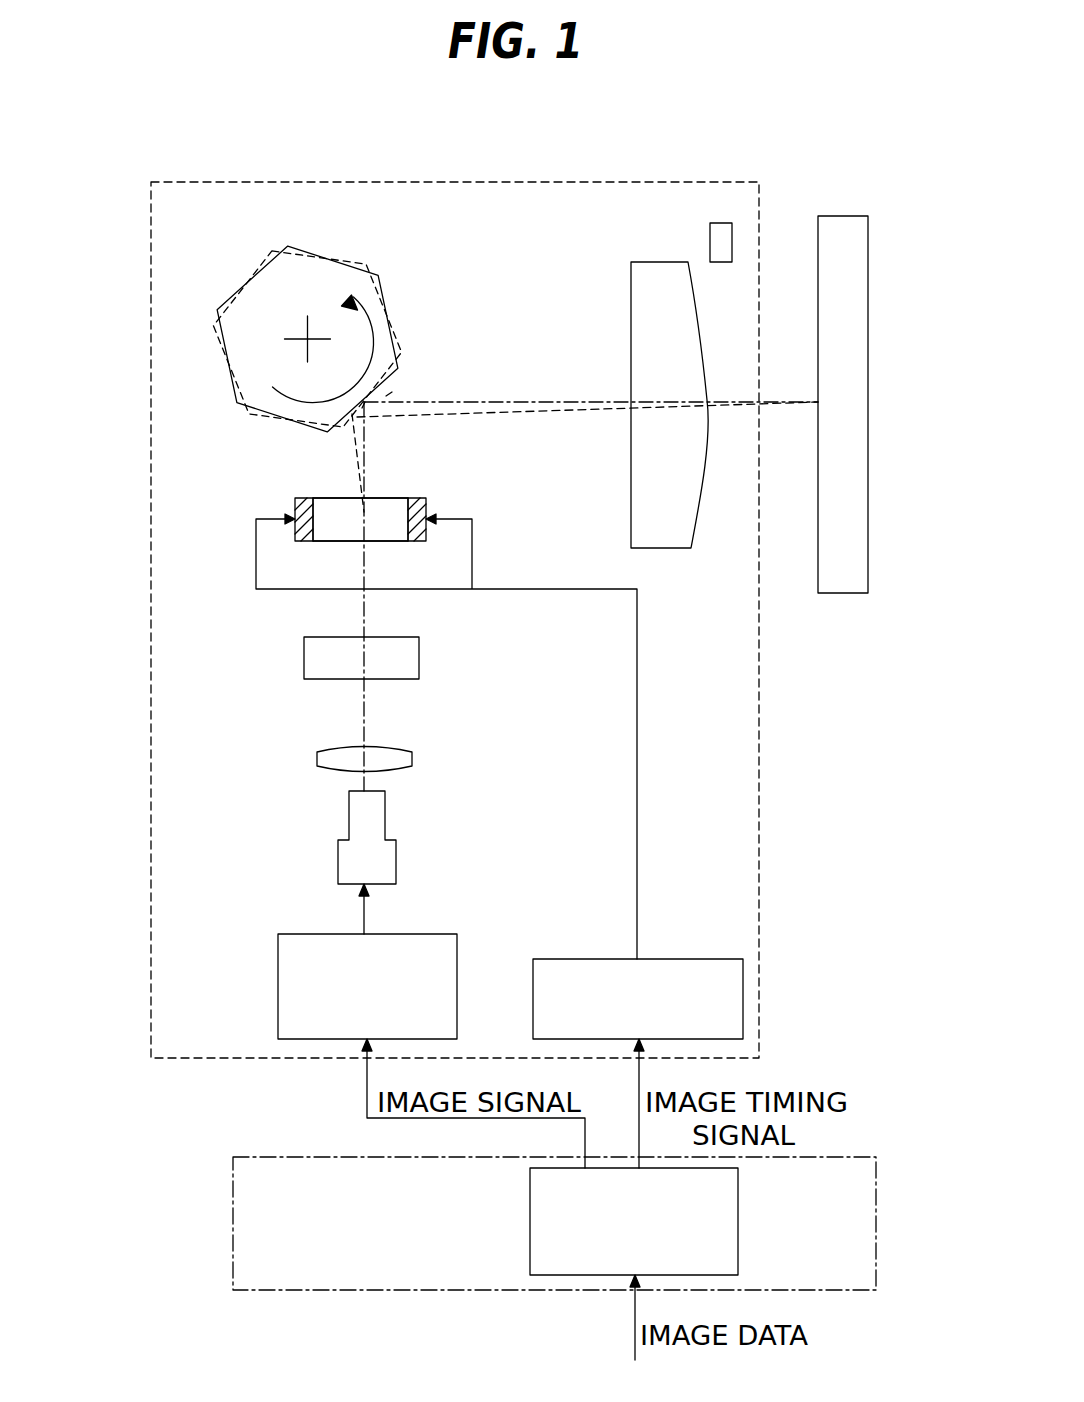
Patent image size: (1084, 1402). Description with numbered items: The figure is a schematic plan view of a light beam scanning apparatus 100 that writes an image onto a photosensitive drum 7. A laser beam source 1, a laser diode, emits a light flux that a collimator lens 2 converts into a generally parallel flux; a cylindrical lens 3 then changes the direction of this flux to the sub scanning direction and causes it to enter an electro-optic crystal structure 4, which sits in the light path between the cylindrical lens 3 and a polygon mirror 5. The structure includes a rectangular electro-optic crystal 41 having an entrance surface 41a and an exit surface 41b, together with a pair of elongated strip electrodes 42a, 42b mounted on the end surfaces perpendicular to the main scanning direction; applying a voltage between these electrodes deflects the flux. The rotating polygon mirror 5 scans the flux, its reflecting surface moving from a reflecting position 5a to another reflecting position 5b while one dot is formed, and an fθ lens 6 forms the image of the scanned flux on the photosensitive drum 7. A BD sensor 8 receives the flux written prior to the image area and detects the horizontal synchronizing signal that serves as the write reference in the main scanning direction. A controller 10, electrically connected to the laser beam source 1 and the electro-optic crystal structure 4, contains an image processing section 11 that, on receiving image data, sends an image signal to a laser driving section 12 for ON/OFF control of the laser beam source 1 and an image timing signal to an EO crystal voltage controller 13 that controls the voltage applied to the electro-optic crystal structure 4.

The light beam scanning apparatus 100 is at (712, 182).
The laser beam source 1 is at (338, 858).
The collimator lens 2 is at (318, 757).
The cylindrical lens 3 is at (318, 668).
The electro-optic crystal structure 4 is at (342, 516).
The electro-optic crystal 41 is at (342, 512).
The entrance surface 41a is at (380, 541).
The exit surface 41b is at (385, 498).
The electrode 42a is at (428, 505).
The electrode 42b is at (294, 510).
The polygon mirror 5 is at (245, 302).
The reflecting position 5a is at (386, 380).
The reflecting position 5b is at (404, 357).
The fθ lens 6 is at (634, 314).
The photosensitive drum 7 is at (832, 298).
The BD sensor 8 is at (732, 223).
The controller 10 is at (843, 1157).
The image processing section 11 is at (530, 1221).
The laser driving section 12 is at (320, 1042).
The EO crystal voltage controller 13 is at (690, 959).